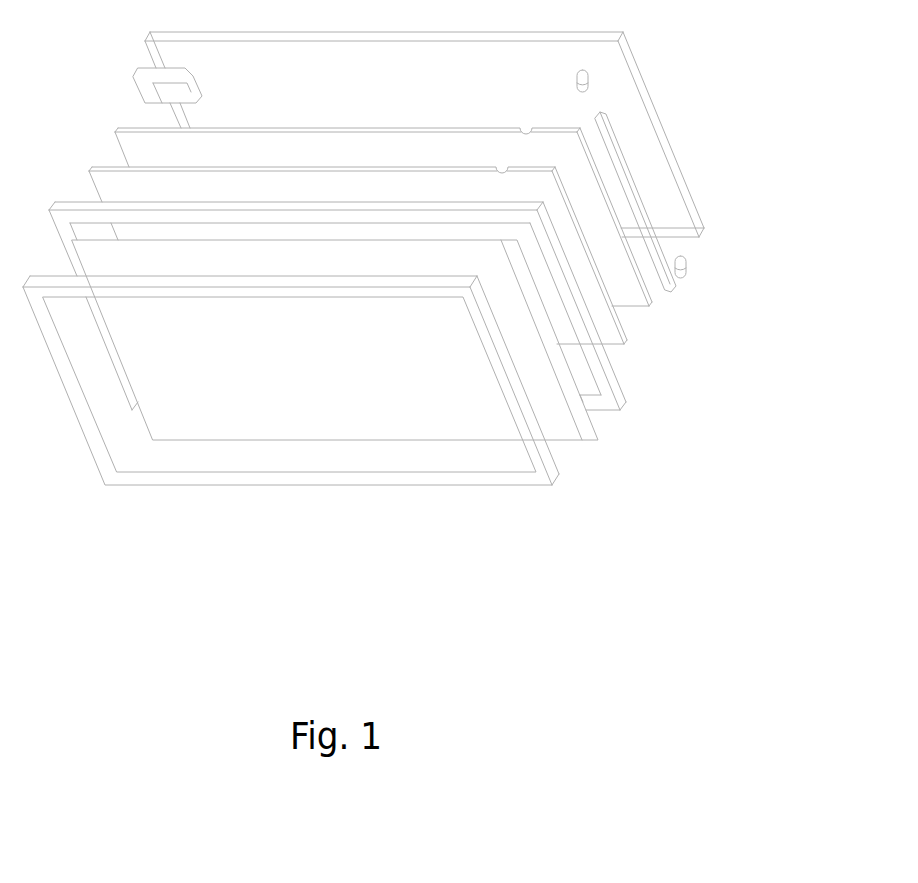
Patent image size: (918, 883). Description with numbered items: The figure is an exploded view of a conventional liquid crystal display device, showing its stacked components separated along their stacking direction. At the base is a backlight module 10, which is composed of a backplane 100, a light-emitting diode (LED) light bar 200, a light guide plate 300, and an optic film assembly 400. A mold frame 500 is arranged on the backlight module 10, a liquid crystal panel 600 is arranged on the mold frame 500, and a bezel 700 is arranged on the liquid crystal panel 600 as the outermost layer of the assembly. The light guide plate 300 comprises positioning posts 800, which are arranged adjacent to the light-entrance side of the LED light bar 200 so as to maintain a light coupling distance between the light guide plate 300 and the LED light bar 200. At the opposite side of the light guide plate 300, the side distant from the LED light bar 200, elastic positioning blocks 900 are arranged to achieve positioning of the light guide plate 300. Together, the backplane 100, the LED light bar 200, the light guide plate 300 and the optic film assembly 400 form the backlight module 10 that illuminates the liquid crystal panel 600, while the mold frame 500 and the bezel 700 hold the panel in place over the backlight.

The backlight module 10 is at (768, 277).
The backplane 100 is at (702, 240).
The light-emitting diode (LED) light bar 200 is at (668, 291).
The light guide plate 300 is at (647, 307).
The optic film assembly 400 is at (625, 343).
The mold frame 500 is at (627, 410).
The liquid crystal panel 600 is at (598, 440).
The bezel 700 is at (555, 485).
The positioning posts 800 is at (590, 84).
The elastic positioning blocks 900 is at (138, 75).